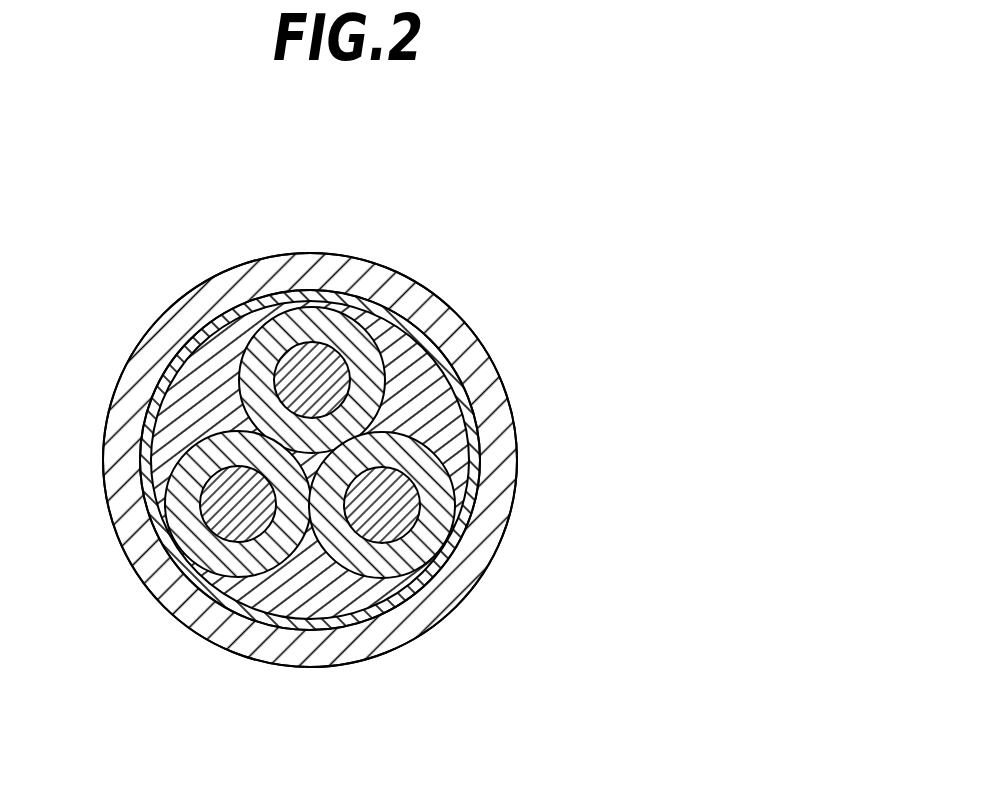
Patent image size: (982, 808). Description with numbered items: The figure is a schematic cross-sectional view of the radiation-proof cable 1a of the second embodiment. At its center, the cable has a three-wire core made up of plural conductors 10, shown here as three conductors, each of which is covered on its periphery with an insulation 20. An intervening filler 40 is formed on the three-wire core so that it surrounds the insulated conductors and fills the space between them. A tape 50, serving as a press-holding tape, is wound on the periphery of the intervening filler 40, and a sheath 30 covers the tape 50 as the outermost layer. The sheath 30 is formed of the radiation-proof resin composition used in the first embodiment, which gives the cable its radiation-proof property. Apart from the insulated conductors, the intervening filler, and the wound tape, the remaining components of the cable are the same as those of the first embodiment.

The radiation-proof cable 1a is at (464, 270).
The conductor 10 is at (312, 358).
The insulation 20 is at (273, 333).
The sheath 30 is at (150, 357).
The intervening filler 40 is at (430, 367).
The tape 50 is at (303, 623).